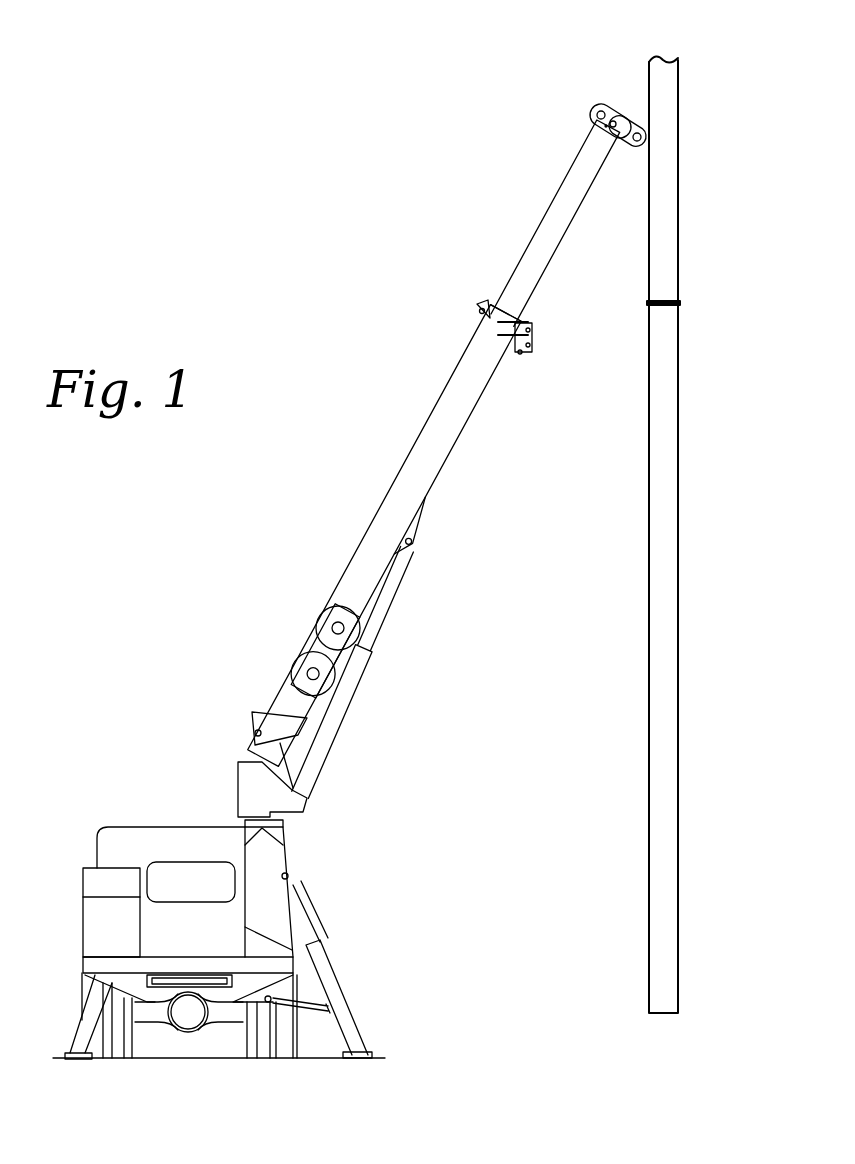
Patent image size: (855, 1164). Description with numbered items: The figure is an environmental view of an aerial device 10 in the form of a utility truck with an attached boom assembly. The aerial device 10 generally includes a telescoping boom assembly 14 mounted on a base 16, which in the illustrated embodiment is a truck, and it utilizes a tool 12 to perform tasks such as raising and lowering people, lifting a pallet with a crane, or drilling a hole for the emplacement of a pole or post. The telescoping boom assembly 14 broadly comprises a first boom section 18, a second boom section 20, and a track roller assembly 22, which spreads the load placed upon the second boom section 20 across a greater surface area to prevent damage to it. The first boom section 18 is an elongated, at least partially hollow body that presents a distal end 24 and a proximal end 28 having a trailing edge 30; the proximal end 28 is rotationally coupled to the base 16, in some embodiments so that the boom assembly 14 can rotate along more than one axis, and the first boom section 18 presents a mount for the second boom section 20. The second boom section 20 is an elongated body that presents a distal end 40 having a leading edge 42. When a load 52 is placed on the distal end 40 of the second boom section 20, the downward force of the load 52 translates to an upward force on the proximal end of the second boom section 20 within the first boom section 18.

The aerial device 10 is at (68, 552).
The tool 12 is at (596, 88).
The telescoping boom assembly 14 is at (445, 357).
The base 16 is at (118, 827).
The first boom section 18 is at (425, 457).
The second boom section 20 is at (598, 162).
The track roller assembly 22 is at (548, 318).
The distal end 24 is at (525, 378).
The proximal end 28 is at (280, 651).
The trailing edge 30 is at (240, 752).
The distal end 40 is at (548, 90).
The leading edge 42 is at (632, 116).
The load 52 is at (668, 216).